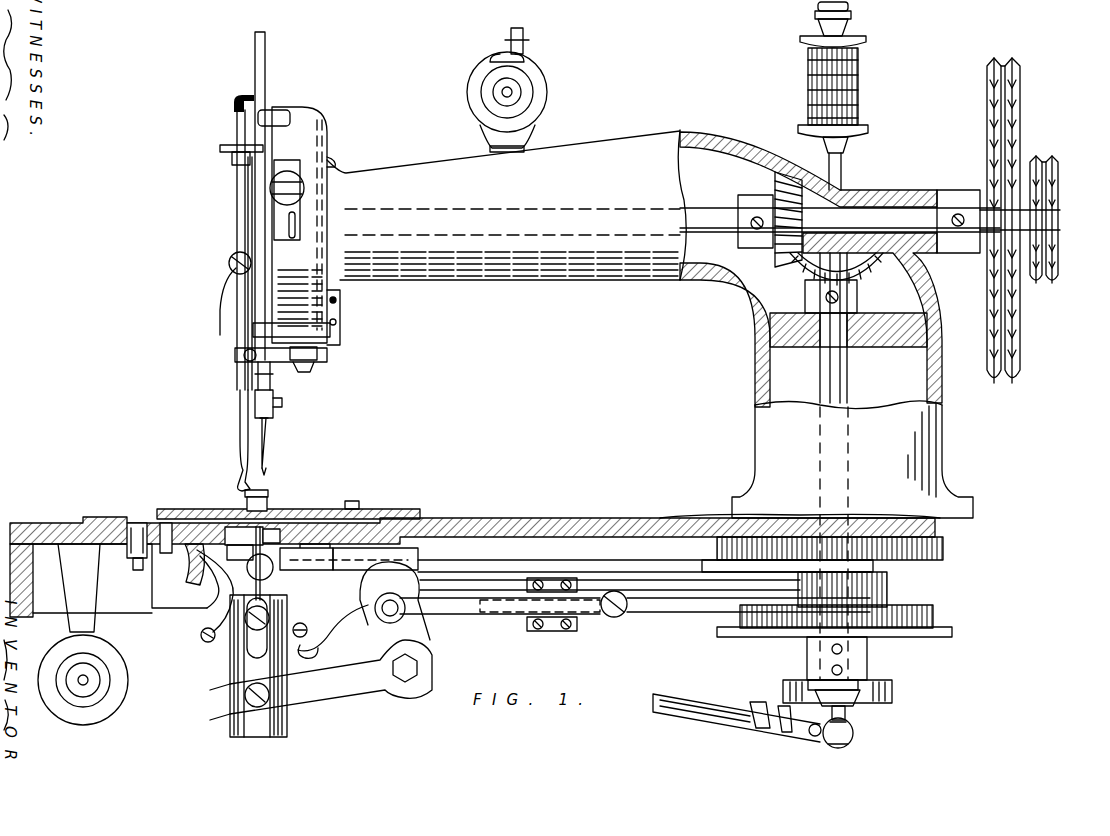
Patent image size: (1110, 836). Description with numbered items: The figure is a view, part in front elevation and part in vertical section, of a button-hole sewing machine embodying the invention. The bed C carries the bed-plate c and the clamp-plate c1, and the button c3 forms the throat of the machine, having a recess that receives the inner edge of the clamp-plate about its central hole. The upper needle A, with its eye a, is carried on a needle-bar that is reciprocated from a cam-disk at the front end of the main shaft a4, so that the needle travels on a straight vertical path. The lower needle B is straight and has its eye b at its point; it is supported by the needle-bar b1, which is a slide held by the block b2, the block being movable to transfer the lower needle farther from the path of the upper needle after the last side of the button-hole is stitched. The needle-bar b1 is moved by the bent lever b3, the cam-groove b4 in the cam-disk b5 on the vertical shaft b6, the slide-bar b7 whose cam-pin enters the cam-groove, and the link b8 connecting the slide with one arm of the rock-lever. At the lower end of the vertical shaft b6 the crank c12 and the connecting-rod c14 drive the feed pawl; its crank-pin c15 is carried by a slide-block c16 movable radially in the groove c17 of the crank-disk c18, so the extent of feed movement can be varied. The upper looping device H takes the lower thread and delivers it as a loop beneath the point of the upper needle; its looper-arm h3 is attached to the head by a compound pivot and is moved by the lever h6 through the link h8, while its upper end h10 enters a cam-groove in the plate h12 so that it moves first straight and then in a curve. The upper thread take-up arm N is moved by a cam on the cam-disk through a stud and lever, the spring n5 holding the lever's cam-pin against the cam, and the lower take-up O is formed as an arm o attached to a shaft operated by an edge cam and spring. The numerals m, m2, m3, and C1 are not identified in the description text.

The main shaft a4 is at (710, 212).
The vertical shaft b6 is at (848, 380).
The column standard m3 is at (787, 518).
The plate h12 is at (220, 149).
The upper end of looper-arm h10 is at (232, 160).
The take-up arm N is at (218, 331).
The looper-arm h3 is at (242, 336).
The spring n5 is at (338, 300).
The lever h6 is at (318, 357).
The link h8 is at (277, 362).
The eye of upper needle a is at (273, 400).
The upper needle A is at (272, 452).
The upper looping device H is at (246, 448).
The bed C is at (412, 520).
The bed-plate c is at (140, 518).
The button c3 is at (247, 492).
The clamp-plate c1 is at (340, 509).
The cloth plate C1 is at (350, 510).
The bed plate m is at (475, 564).
The feed rod m2 is at (575, 568).
The eye of lower needle b is at (252, 563).
The lower needle B is at (252, 570).
The lower needle-bar b1 is at (258, 655).
The block b2 is at (262, 678).
The bent lever b3 is at (352, 690).
The arm of lower take-up o is at (284, 628).
The lower take-up O is at (317, 655).
The link b8 is at (466, 613).
The slide-bar b7 is at (652, 604).
The cam-groove b4 is at (740, 614).
The cam-disk b5 is at (792, 620).
The groove c17 is at (893, 683).
The crank-disk c18 is at (795, 690).
The slide-block c16 is at (848, 700).
The crank c12 is at (854, 740).
The crank-pin c15 is at (820, 742).
The connecting-rod c14 is at (702, 712).